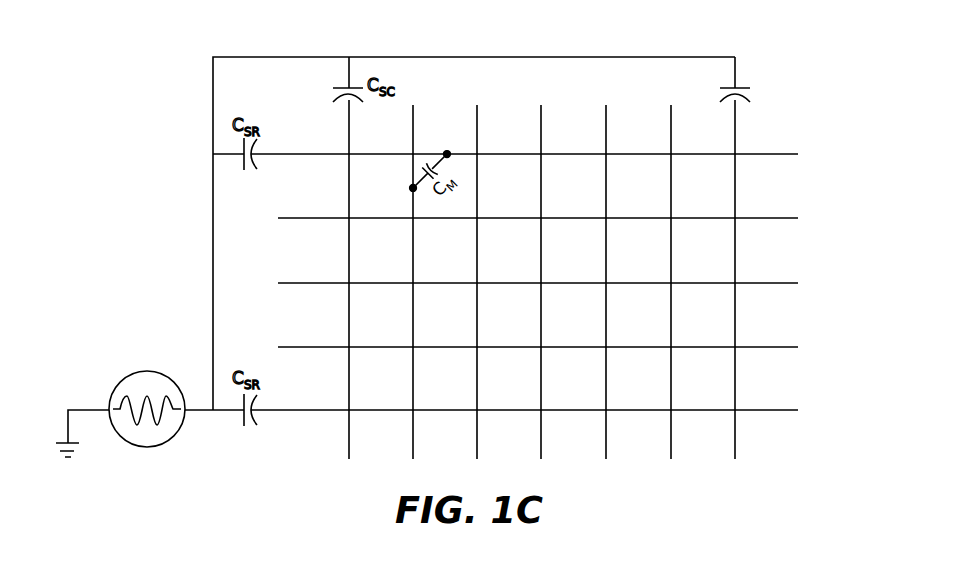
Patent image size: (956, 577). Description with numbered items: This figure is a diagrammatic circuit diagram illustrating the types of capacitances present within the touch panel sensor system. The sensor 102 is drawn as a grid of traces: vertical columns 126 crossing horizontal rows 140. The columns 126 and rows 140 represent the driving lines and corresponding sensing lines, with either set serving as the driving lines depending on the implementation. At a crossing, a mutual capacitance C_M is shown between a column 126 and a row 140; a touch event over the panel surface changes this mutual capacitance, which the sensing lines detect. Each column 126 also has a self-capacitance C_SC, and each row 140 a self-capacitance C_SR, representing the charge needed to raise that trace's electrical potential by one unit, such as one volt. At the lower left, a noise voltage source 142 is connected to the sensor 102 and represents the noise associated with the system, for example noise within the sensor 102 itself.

The sensor 102 is at (787, 263).
The columns 126 is at (737, 128).
The rows 140 is at (775, 152).
The noise voltage source 142 is at (147, 371).